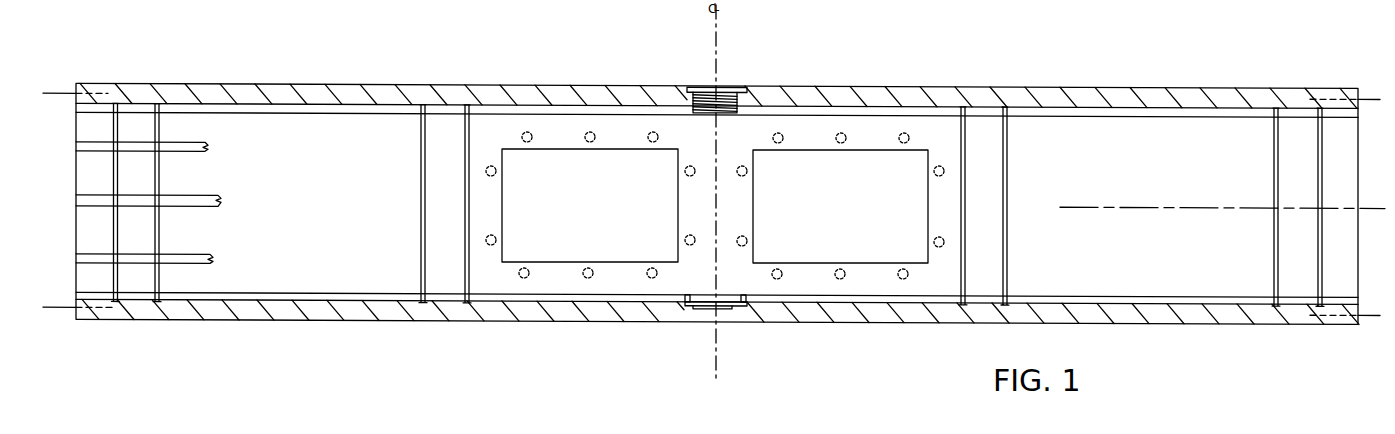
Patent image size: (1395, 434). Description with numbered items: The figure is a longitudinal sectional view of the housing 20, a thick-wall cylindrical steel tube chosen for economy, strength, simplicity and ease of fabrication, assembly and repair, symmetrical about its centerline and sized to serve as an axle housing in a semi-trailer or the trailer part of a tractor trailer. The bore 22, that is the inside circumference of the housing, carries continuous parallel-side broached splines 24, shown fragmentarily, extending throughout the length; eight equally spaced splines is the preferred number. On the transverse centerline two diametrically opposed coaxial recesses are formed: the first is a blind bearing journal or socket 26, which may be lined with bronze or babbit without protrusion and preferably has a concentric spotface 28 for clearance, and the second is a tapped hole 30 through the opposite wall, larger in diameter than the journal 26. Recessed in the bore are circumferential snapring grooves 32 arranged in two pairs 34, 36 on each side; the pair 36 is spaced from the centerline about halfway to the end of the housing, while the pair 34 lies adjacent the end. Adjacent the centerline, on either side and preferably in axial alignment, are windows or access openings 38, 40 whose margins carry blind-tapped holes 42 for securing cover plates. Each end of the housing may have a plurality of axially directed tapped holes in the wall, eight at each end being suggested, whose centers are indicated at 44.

The housing 20 is at (277, 86).
The bore 22 is at (322, 288).
The broached splines 24 is at (191, 268).
The blind bearing journal 26 is at (724, 294).
The spotface 28 is at (690, 294).
The tapped hole 30 is at (722, 99).
The snapring grooves 32 is at (116, 278).
The end pair of snapring grooves 34 is at (113, 95).
The intermediate pair of snapring grooves 36 is at (420, 96).
The access opening 38 is at (508, 263).
The access opening 40 is at (878, 264).
The blind-tapped holes 42 is at (531, 133).
The tapped hole centers 44 is at (56, 92).